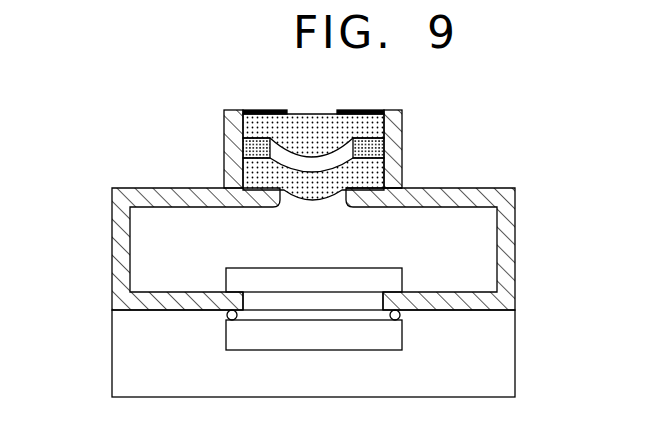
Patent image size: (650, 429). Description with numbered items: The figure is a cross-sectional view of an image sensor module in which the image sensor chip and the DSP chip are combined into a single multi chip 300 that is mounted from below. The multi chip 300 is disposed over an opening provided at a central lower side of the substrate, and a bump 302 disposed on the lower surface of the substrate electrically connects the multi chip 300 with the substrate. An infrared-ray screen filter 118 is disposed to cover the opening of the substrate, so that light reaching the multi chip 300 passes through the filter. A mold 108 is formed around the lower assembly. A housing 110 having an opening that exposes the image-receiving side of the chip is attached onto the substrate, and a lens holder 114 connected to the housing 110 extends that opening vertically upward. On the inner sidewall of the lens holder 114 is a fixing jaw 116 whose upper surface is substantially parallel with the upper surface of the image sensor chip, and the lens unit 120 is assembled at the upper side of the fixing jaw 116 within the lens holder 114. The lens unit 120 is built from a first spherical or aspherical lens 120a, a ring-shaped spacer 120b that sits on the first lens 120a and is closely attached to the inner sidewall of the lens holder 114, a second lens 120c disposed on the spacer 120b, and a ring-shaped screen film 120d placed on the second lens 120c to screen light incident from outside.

The mold 108 is at (118, 384).
The housing 110 is at (125, 237).
The lens holder 114 is at (393, 142).
The fixing jaw 116 is at (384, 192).
The infrared-ray screen filter 118 is at (226, 280).
The lens unit 120 is at (230, 139).
The first lens 120a is at (243, 174).
The spacer 120b is at (243, 149).
The second lens 120c is at (243, 128).
The screen film 120d is at (243, 111).
The multi chip 300 is at (226, 340).
The bump 302 is at (226, 316).